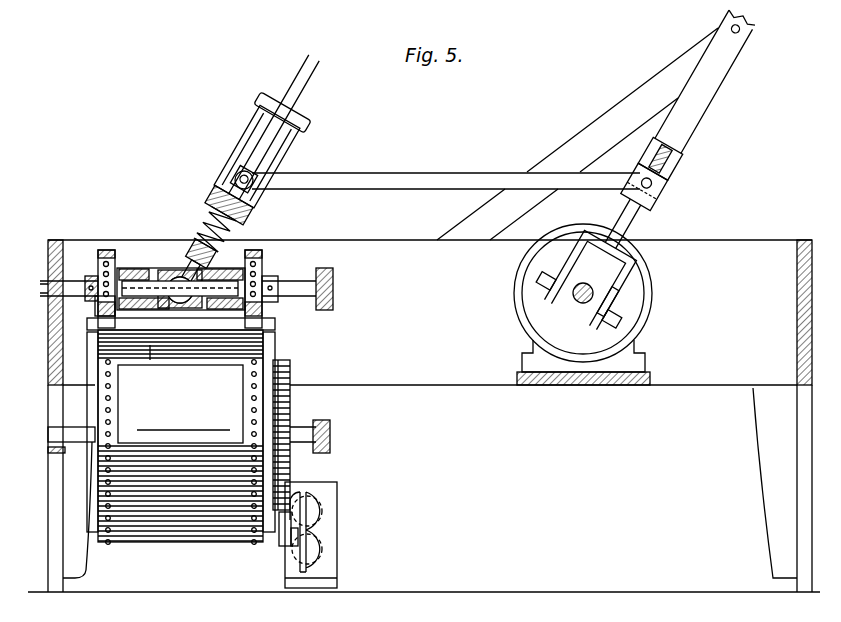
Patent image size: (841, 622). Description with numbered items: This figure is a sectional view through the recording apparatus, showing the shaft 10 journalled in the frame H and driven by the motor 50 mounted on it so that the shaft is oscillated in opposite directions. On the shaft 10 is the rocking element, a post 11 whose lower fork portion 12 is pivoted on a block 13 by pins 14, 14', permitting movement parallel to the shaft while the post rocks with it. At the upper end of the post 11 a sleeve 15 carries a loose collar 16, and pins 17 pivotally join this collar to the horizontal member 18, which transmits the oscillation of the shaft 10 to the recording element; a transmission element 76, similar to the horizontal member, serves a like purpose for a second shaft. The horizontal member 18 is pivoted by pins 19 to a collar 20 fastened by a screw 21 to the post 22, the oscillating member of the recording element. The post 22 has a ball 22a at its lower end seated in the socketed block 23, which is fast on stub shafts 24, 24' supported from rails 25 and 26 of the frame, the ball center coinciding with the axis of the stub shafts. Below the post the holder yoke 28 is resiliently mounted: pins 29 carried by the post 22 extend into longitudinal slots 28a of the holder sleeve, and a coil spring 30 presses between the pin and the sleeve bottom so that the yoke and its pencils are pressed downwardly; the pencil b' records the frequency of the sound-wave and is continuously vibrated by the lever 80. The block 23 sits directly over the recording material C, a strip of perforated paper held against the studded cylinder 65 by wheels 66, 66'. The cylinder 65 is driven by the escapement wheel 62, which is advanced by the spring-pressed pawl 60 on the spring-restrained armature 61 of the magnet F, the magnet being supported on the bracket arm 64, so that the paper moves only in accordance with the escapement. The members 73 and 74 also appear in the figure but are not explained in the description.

The shaft 10 is at (560, 303).
The post 11 is at (667, 160).
The fork portion 12 is at (628, 272).
The block 13 is at (582, 306).
The pin 14 is at (512, 281).
The pin 14' is at (648, 327).
The sleeve 15 is at (660, 183).
The loose collar 16 is at (655, 197).
The pins 17 is at (643, 207).
The horizontal member 18 is at (403, 150).
The pins 19 is at (258, 178).
The collar 20 is at (236, 173).
The screw 21 is at (228, 172).
The post 22 is at (305, 92).
The ball 22a is at (181, 304).
The socketed block 23 is at (186, 266).
The stub shaft 24 is at (69, 253).
The stub shaft 24' is at (294, 309).
The rail 25 is at (50, 248).
The rail 26 is at (333, 275).
The holder yoke 28 is at (175, 265).
The longitudinal slots 28a is at (195, 232).
The pins 29 is at (243, 236).
The coil spring 30 is at (262, 241).
The motor 50 is at (627, 310).
The spring-pressed pawl 60 is at (283, 522).
The spring-restrained armature 61 is at (291, 542).
The escapement wheel 62 is at (287, 397).
The bracket arm 64 is at (308, 588).
The studded cylinder 65 is at (148, 538).
The wheel 66 is at (272, 286).
The wheel 66' is at (90, 313).
The lever 73 is at (693, 112).
The brace bar 74 is at (614, 113).
The transmission element 76 is at (280, 145).
The lever 80 is at (225, 194).
The frame H is at (424, 416).
The magnet F is at (330, 564).
The perforated paper strip C is at (212, 340).
The pencil b' is at (146, 364).